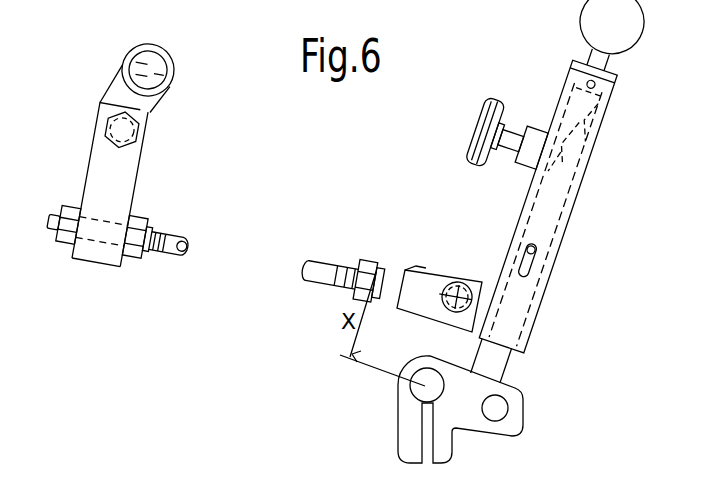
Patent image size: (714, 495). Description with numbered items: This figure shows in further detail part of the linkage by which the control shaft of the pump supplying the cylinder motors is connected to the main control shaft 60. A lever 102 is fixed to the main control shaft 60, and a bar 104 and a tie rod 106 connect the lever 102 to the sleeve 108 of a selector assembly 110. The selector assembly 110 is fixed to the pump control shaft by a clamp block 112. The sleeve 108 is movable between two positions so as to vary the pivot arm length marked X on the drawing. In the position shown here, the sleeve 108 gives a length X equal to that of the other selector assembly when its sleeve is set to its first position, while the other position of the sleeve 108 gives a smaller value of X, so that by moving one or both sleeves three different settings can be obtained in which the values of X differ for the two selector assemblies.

The main control shaft 60 is at (150, 54).
The lever 102 is at (158, 104).
The bar 104 is at (127, 173).
The tie rod 106 is at (175, 240).
The sleeve 108 is at (545, 298).
The selector assembly 110 is at (571, 216).
The clamp block 112 is at (515, 398).